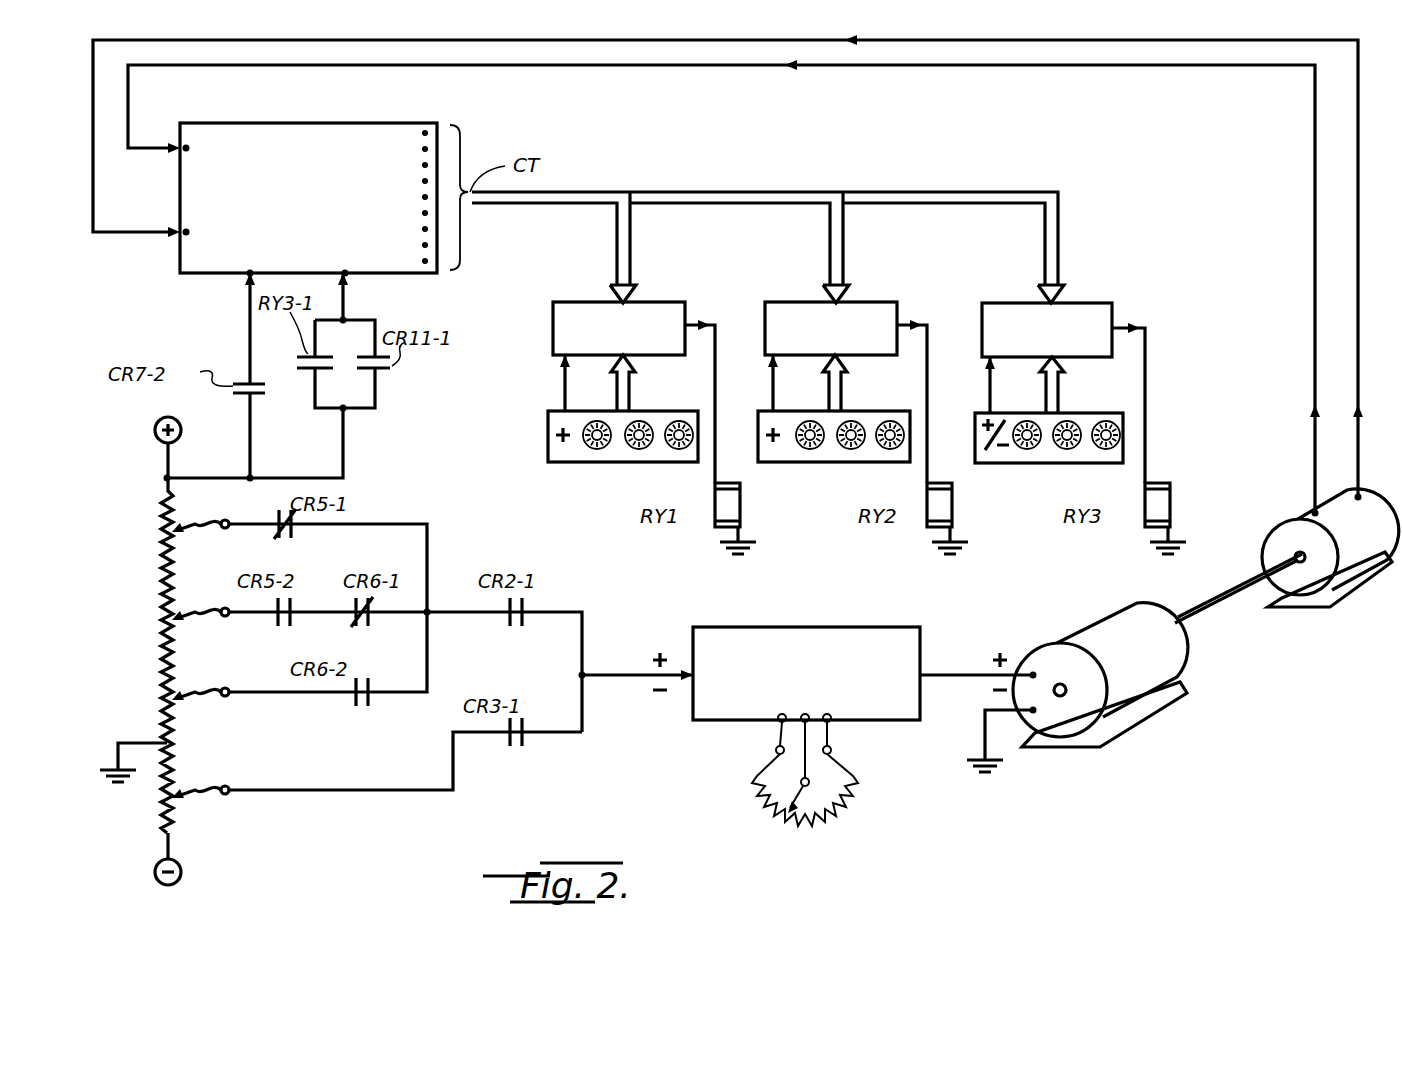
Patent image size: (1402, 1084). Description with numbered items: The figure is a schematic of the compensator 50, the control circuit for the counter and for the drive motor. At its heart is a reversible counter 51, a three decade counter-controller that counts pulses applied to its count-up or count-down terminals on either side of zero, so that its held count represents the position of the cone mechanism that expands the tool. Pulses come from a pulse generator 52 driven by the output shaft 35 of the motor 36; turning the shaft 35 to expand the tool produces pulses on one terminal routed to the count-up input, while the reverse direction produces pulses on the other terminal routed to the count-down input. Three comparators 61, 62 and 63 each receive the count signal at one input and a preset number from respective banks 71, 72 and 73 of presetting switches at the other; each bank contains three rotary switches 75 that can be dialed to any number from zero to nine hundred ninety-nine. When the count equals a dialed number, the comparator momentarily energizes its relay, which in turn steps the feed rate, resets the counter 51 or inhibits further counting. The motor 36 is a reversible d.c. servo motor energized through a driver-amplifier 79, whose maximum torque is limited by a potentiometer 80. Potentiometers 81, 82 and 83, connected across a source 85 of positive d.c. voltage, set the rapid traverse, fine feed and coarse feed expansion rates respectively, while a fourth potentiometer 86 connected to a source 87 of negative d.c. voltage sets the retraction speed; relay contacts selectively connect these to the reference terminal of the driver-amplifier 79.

The compensator 50 is at (606, 125).
The reversible counter 51 is at (291, 123).
The pulse generator 52 is at (1268, 542).
The output shaft 35 is at (1238, 600).
The motor 36 is at (1098, 620).
The comparator 61 is at (578, 302).
The comparator 62 is at (790, 302).
The comparator 63 is at (1000, 303).
The bank of presetting switches 71 is at (553, 465).
The bank of presetting switches 72 is at (803, 465).
The bank of presetting switches 73 is at (1017, 466).
The rotary switches 75 is at (597, 449).
The driver-amplifier 79 is at (827, 627).
The potentiometer 80 is at (850, 796).
The potentiometer 81 is at (160, 546).
The potentiometer 82 is at (160, 630).
The potentiometer 83 is at (160, 698).
The source of positive d.c. voltage 85 is at (154, 432).
The potentiometer 86 is at (160, 806).
The source of negative d.c. voltage 87 is at (158, 884).